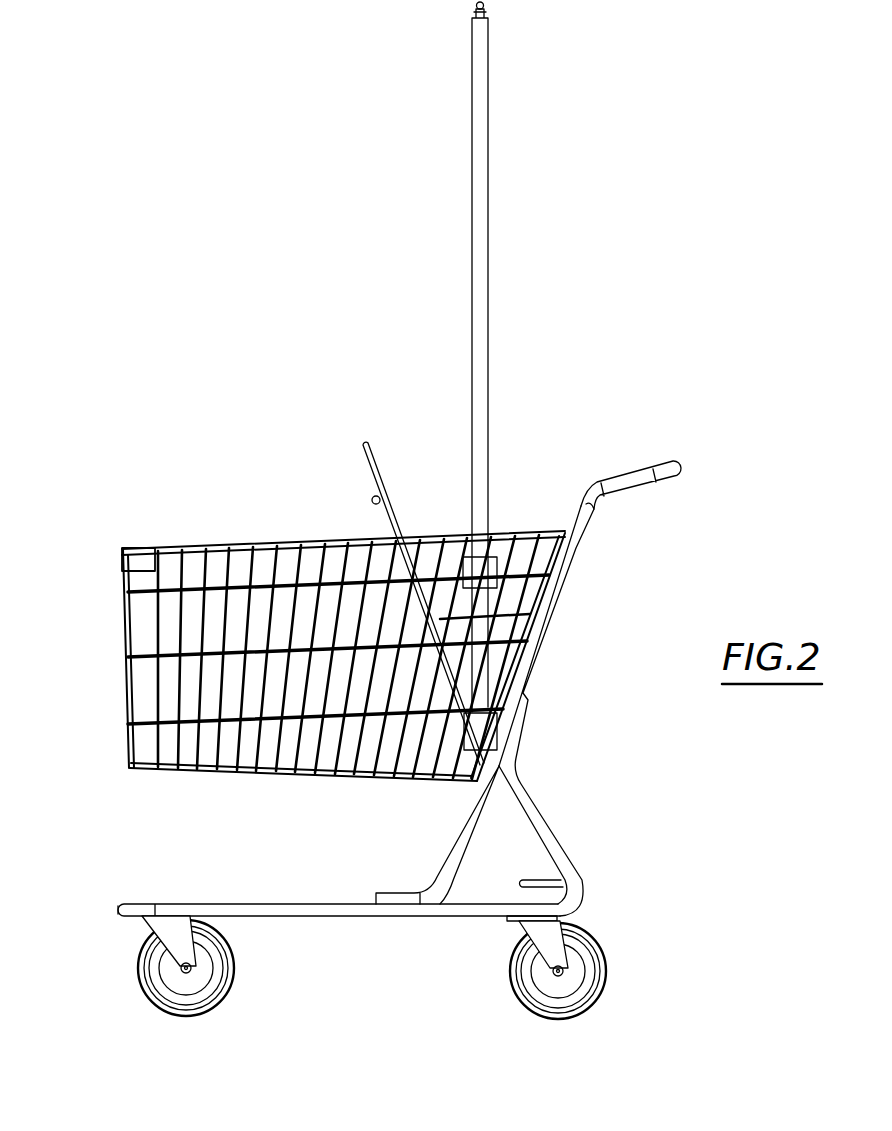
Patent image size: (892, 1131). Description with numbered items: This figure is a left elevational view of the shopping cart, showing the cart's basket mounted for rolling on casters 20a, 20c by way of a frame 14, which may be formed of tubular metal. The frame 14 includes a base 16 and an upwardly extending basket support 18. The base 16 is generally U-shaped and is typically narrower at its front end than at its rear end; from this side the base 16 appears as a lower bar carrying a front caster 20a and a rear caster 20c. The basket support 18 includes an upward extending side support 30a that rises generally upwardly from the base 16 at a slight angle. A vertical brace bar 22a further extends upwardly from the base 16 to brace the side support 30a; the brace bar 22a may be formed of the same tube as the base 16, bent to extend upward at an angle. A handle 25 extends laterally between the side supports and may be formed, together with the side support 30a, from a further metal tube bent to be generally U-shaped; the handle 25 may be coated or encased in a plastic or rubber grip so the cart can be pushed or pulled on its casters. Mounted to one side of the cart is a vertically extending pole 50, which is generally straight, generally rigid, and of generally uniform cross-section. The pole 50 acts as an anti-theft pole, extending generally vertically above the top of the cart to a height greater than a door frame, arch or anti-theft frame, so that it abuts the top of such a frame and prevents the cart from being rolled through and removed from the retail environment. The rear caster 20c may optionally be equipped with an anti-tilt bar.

The frame 14 is at (286, 906).
The base 16 is at (130, 903).
The basket support 18 is at (190, 553).
The caster 20a is at (222, 976).
The caster 20c is at (604, 972).
The vertical brace bar 22a is at (540, 813).
The handle 25 is at (677, 463).
The side support 30a is at (463, 848).
The pole 50 is at (483, 278).